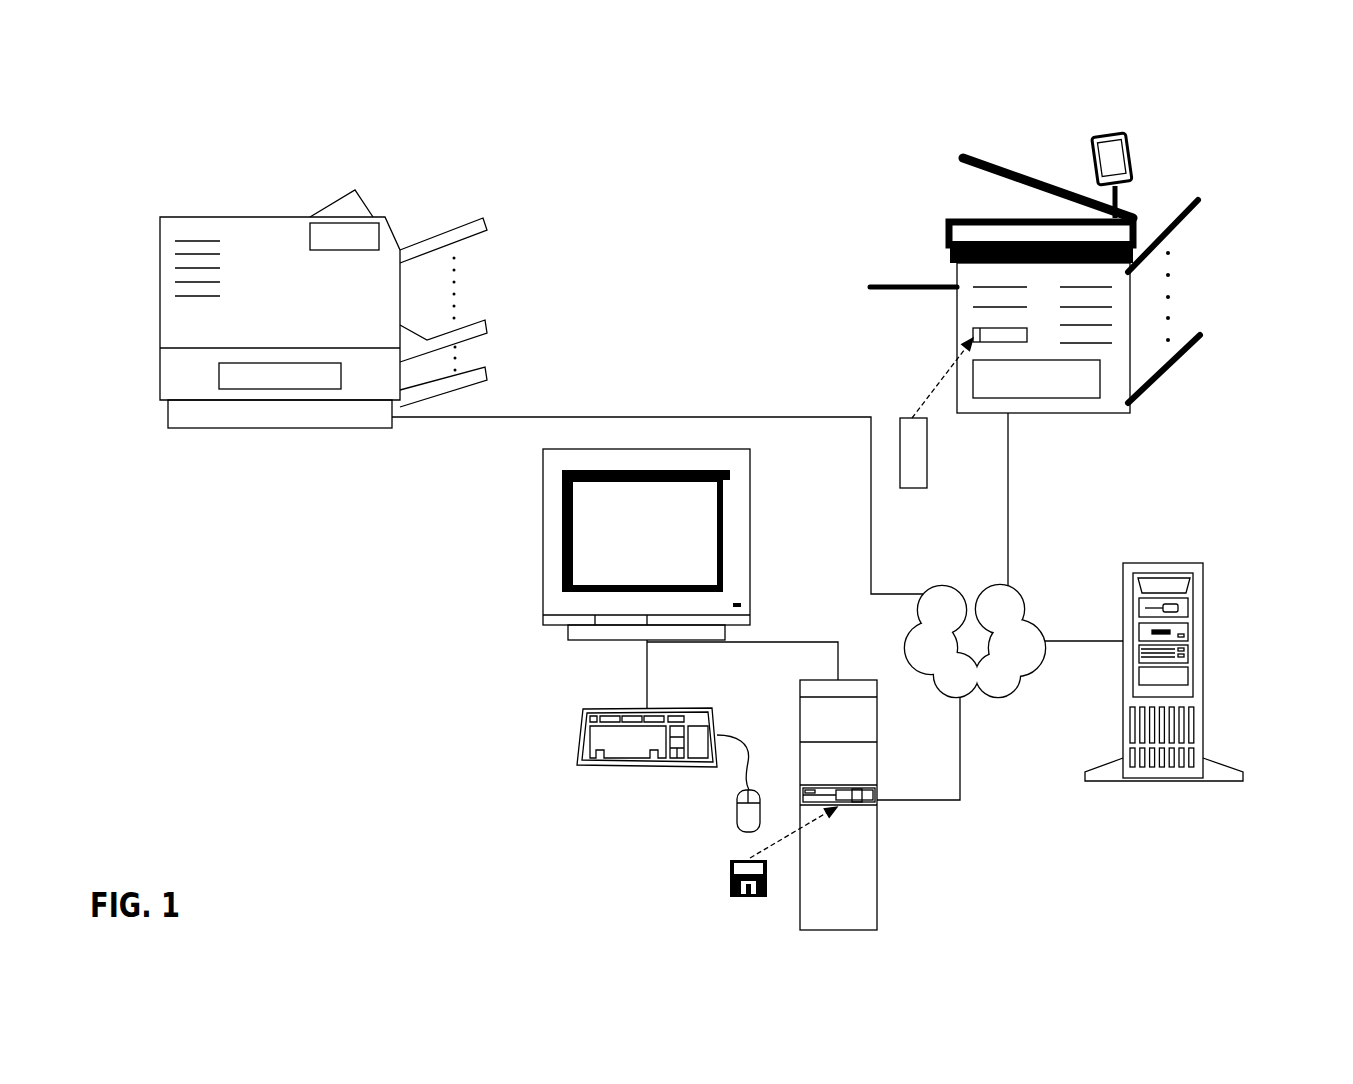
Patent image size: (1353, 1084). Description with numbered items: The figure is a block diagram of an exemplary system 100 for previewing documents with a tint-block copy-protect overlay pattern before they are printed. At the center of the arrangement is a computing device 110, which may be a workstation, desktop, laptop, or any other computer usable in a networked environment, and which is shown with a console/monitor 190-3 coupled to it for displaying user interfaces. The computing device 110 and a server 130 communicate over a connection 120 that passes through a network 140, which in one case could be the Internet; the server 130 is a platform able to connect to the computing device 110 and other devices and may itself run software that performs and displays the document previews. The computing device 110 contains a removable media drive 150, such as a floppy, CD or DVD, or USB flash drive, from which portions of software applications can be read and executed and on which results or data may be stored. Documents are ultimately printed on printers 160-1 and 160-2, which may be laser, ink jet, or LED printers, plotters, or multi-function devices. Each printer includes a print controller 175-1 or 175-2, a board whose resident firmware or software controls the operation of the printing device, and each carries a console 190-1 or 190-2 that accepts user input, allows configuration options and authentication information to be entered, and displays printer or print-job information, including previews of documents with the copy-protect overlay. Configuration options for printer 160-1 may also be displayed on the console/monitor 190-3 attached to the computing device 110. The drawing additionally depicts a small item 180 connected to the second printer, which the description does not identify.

The system 100 is at (165, 100).
The computing device 110 is at (751, 805).
The connection 120 is at (757, 595).
The server 130 is at (1164, 654).
The network 140 is at (995, 654).
The removable media drive 150 is at (783, 867).
The printer 160-1 is at (363, 322).
The printer 160-2 is at (957, 308).
The print controller 175-1 is at (280, 376).
The print controller 175-2 is at (1036, 379).
The memory card 180 is at (937, 413).
The console 190-1 is at (1138, 158).
The console 190-2 is at (310, 237).
The console/monitor 190-3 is at (542, 489).